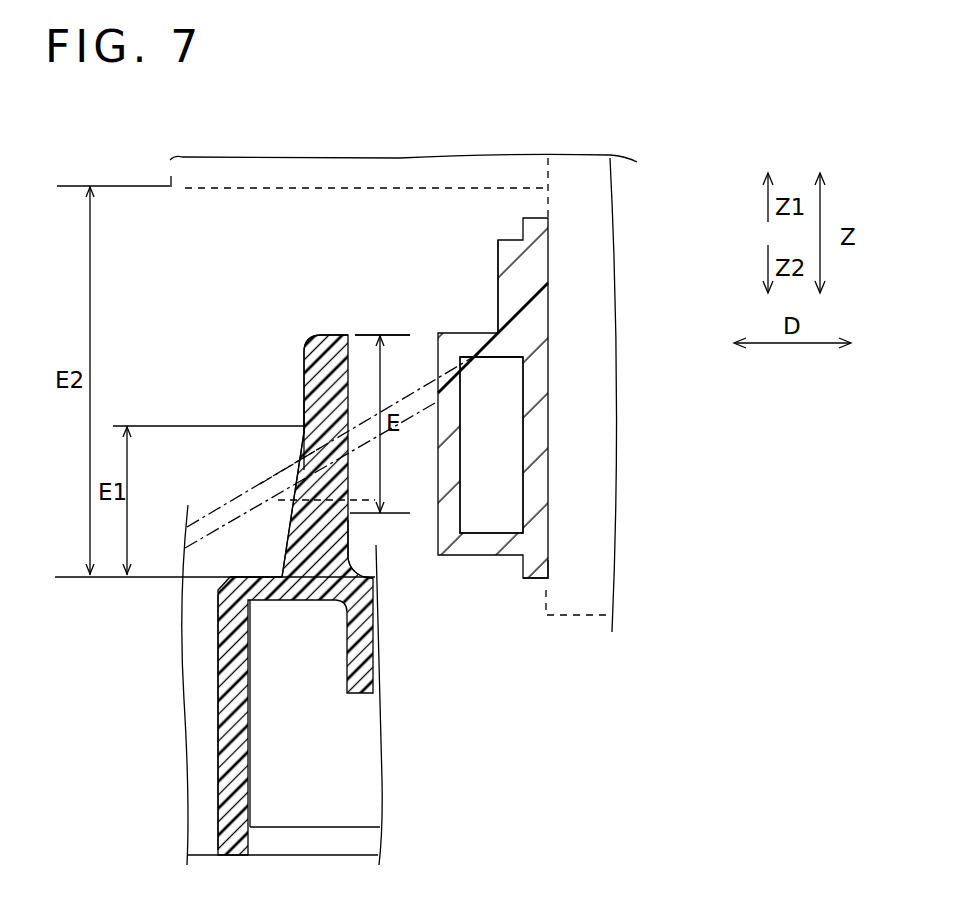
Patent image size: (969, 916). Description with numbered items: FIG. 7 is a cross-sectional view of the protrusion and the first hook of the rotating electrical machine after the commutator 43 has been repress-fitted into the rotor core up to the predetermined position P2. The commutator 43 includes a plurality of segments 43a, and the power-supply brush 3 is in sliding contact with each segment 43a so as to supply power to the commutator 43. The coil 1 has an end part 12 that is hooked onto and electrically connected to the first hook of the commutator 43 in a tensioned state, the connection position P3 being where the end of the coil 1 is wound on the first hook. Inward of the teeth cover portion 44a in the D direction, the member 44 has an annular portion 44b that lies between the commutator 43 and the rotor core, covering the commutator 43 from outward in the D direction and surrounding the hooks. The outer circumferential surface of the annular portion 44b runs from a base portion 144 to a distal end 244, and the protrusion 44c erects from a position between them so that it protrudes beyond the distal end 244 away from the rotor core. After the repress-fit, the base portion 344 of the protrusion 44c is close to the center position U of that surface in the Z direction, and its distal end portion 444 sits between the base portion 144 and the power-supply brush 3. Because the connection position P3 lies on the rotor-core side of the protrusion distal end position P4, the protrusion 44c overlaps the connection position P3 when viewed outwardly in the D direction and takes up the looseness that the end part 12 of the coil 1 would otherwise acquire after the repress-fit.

The power-supply brush 3 is at (276, 190).
The bracket 44 is at (212, 664).
The teeth cover portion 44a is at (216, 631).
The annular portion 44b is at (297, 537).
The protrusion 44c is at (304, 360).
The base portion 144 is at (280, 574).
The distal end 244 is at (190, 426).
The base portion 344 is at (355, 522).
The distal end portion 444 is at (338, 334).
The coil 1 is at (226, 505).
The center position U is at (285, 490).
The commutator 43 is at (553, 295).
The segment 43a is at (548, 585).
The end part 12 is at (470, 405).
The predetermined position P2 is at (495, 290).
The connection position P3 is at (490, 370).
The protrusion distal end position P4 is at (399, 334).